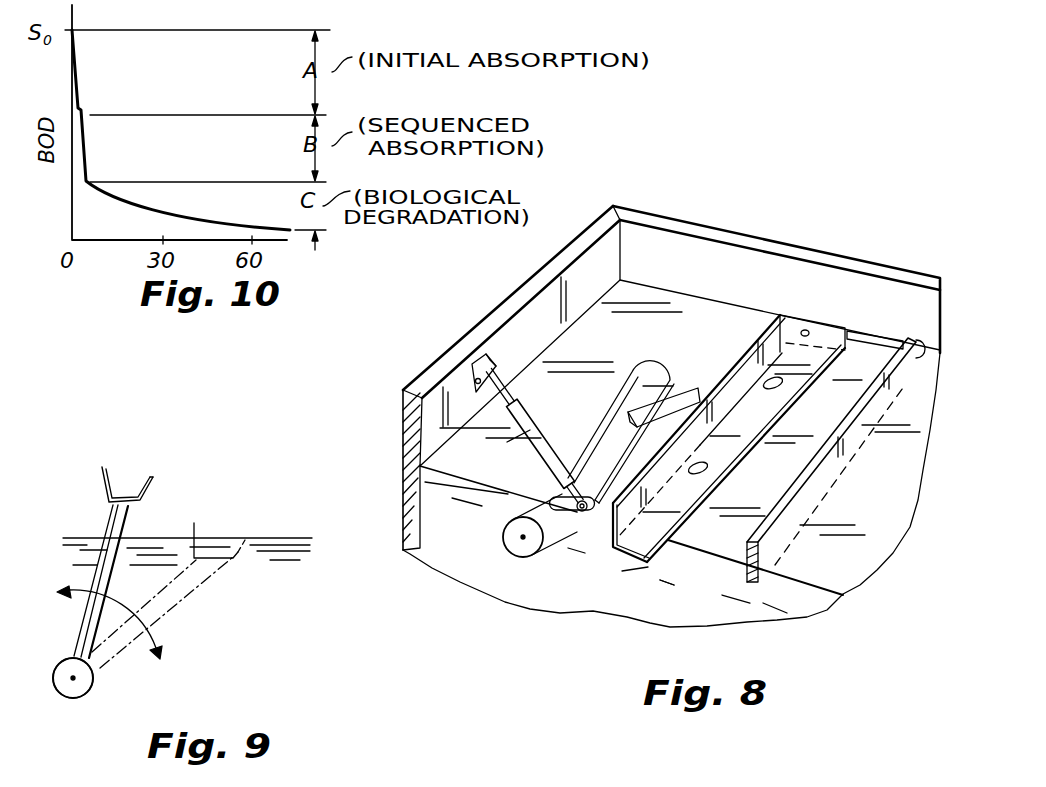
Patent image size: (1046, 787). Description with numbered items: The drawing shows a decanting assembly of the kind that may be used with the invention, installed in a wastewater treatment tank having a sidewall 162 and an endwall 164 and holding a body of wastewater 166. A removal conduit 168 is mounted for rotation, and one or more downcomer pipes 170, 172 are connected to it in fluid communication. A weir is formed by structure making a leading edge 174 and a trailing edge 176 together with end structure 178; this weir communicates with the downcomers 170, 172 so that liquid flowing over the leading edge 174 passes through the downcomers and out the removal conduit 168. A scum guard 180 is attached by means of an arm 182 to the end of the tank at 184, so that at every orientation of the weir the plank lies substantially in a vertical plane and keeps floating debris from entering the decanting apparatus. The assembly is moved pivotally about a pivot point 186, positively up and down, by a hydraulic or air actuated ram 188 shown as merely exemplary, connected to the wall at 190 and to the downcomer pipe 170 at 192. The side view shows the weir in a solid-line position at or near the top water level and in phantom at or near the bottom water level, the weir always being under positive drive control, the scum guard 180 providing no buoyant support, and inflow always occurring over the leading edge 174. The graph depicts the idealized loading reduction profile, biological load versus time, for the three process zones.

In FIG. 8, the sidewall 162 is at (752, 262).
In FIG. 8, the endwall 164 is at (520, 323).
In FIG. 9, the body of wastewater 166 is at (297, 598).
In FIG. 8, the body of wastewater 166 is at (640, 310).
In FIG. 9, the removal conduit 168 is at (67, 700).
In FIG. 8, the removal conduit 168 is at (590, 437).
In FIG. 9, the downcomer pipe 170 is at (97, 578).
In FIG. 8, the downcomer pipe 170 is at (600, 508).
In FIG. 8, the downcomer pipe 172 is at (688, 402).
In FIG. 9, the leading edge 174 is at (152, 478).
In FIG. 8, the leading edge 174 is at (700, 523).
In FIG. 9, the trailing edge 176 is at (102, 468).
In FIG. 8, the trailing edge 176 is at (740, 357).
In FIG. 8, the end structure 178 is at (822, 323).
In FIG. 8, the scum guard 180 is at (818, 473).
In FIG. 8, the arm 182 is at (882, 338).
In FIG. 8, the attachment point 184 is at (803, 325).
In FIG. 9, the pivot point 186 is at (76, 679).
In FIG. 8, the pivot point 186 is at (521, 538).
In FIG. 8, the hydraulic or air actuated ram 188 is at (532, 443).
In FIG. 8, the wall connection 190 is at (475, 380).
In FIG. 8, the downcomer connection 192 is at (575, 512).